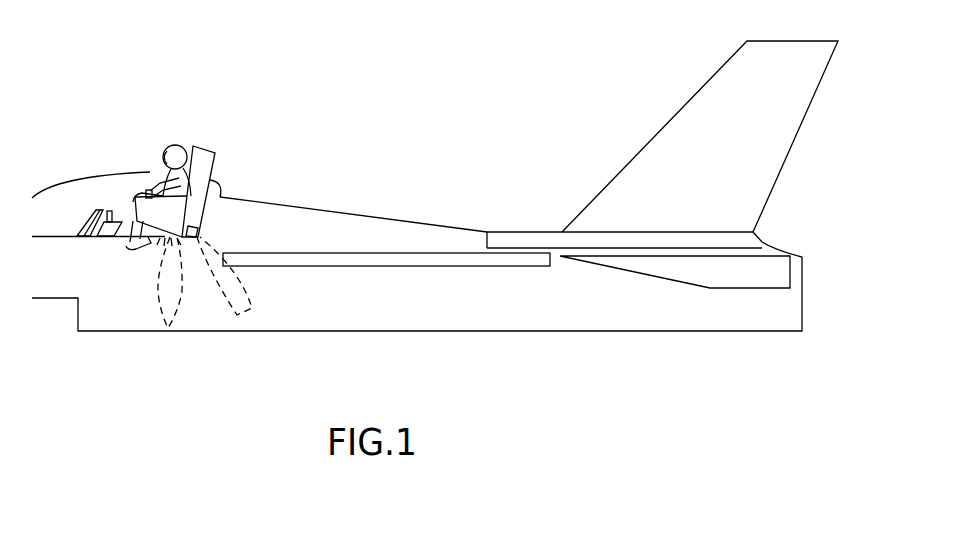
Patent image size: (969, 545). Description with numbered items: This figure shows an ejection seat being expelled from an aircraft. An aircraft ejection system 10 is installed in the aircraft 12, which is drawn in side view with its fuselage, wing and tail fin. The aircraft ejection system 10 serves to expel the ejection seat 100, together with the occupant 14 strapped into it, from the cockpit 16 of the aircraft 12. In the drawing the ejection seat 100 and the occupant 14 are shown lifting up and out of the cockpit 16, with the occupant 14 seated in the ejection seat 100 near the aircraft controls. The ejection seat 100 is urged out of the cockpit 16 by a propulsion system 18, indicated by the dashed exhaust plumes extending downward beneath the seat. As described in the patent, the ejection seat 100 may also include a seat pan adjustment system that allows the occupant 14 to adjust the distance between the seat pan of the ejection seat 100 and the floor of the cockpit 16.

The aircraft ejection system 10 is at (345, 117).
The aircraft 12 is at (446, 304).
The occupant 14 is at (167, 153).
The cockpit 16 is at (64, 217).
The propulsion system 18 is at (165, 287).
The ejection seat 100 is at (208, 158).